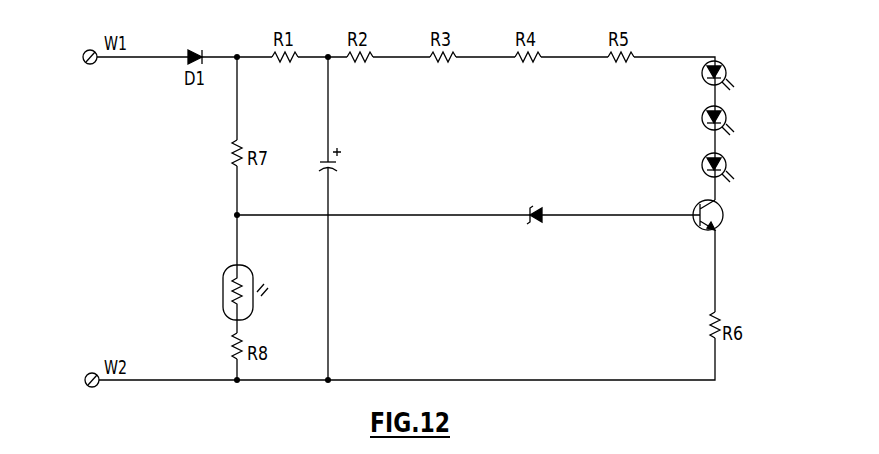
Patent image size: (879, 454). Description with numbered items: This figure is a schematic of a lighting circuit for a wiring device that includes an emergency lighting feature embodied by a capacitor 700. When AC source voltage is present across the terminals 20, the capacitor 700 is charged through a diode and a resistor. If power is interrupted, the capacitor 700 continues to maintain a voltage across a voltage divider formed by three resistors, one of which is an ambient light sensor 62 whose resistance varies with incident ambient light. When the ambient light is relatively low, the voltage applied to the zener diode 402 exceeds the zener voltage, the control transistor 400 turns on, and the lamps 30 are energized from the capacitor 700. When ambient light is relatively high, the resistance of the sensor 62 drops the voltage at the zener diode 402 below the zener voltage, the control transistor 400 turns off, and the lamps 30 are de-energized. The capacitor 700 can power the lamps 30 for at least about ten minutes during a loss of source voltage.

The terminals 20 is at (86, 50).
The lamps 30 is at (702, 73).
The ambient light sensor 62 is at (226, 270).
The control transistor 400 is at (705, 232).
The zener diode 402 is at (533, 206).
The capacitor 700 is at (345, 167).